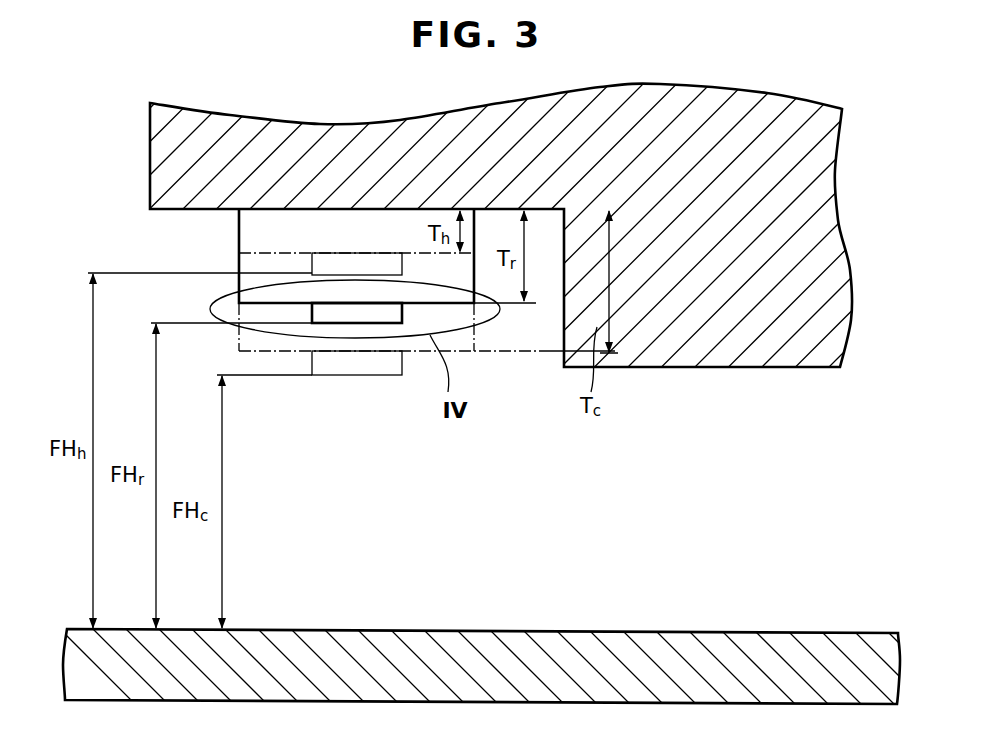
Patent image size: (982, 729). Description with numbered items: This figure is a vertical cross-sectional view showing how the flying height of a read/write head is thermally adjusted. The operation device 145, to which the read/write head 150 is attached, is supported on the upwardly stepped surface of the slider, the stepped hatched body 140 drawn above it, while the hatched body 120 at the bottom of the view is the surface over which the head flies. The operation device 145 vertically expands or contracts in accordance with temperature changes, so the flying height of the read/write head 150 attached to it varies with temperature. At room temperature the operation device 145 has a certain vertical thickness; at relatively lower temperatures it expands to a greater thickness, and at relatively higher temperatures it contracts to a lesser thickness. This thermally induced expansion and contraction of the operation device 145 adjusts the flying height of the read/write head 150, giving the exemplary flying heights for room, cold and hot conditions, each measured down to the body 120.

The disk / recording medium 120 is at (842, 645).
The slider body 140 is at (773, 338).
The operation device 145 is at (240, 238).
The read/write head 150 is at (395, 312).